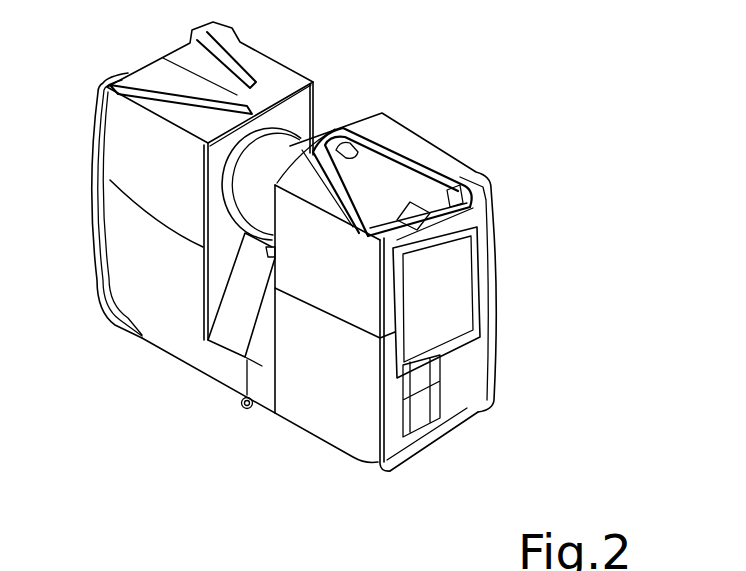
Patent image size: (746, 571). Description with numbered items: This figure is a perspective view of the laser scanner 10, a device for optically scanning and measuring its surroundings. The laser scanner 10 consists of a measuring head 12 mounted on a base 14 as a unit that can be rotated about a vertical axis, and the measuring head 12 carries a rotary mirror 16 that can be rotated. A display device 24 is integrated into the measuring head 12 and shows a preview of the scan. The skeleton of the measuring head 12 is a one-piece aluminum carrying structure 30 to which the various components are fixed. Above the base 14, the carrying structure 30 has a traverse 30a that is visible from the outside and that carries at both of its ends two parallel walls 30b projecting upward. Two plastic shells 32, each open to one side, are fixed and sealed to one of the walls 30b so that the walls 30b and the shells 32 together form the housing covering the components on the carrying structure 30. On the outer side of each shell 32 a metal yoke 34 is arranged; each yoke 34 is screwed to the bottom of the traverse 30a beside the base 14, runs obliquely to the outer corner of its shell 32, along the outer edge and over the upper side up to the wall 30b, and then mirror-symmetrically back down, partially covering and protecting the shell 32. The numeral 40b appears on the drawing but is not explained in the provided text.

The laser scanner 10 is at (480, 125).
The measuring head 12 is at (445, 422).
The base 14 is at (240, 407).
The rotary mirror 16 is at (290, 150).
The display device 24 is at (455, 290).
The carrying structure 30 is at (227, 353).
The traverse 30a is at (266, 328).
The walls 30b is at (302, 102).
The shells 32 is at (160, 313).
The yoke 34 is at (137, 78).
The connector portion 40b is at (206, 562).